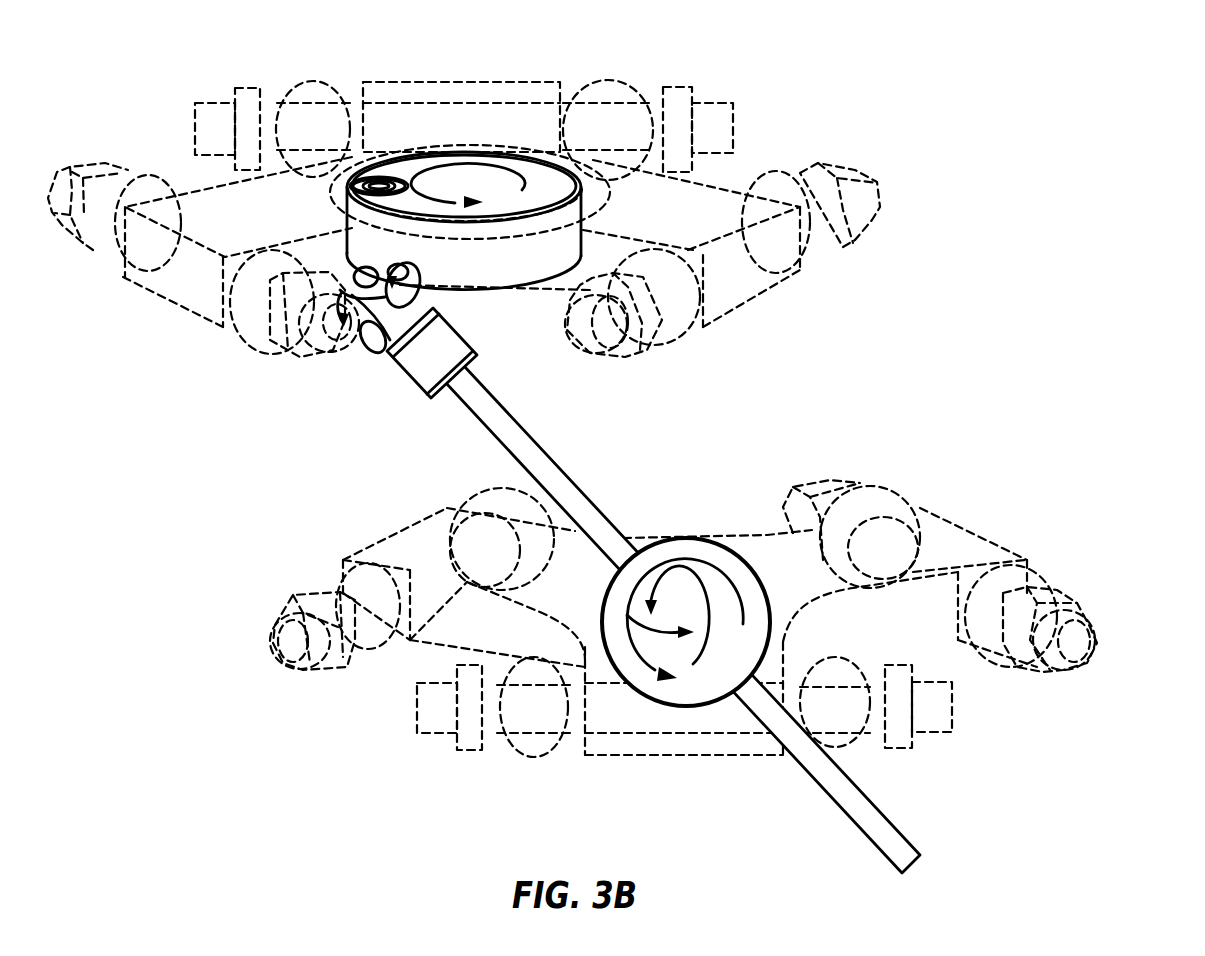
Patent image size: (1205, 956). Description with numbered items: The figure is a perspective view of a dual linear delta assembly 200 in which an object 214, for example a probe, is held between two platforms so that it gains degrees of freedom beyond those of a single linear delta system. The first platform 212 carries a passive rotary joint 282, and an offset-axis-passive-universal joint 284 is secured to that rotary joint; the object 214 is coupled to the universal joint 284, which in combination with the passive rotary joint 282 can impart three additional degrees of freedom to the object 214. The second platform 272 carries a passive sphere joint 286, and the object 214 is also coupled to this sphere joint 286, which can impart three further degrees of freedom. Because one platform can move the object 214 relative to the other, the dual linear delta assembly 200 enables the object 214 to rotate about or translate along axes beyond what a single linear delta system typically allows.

The dual linear delta assembly 200 is at (1104, 359).
The first platform 212 is at (903, 226).
The second platform 272 is at (1095, 583).
The passive rotary joint 282 is at (539, 177).
The offset-axis-passive-universal joint 284 is at (443, 336).
The passive sphere joint 286 is at (720, 560).
The object 214 is at (862, 801).